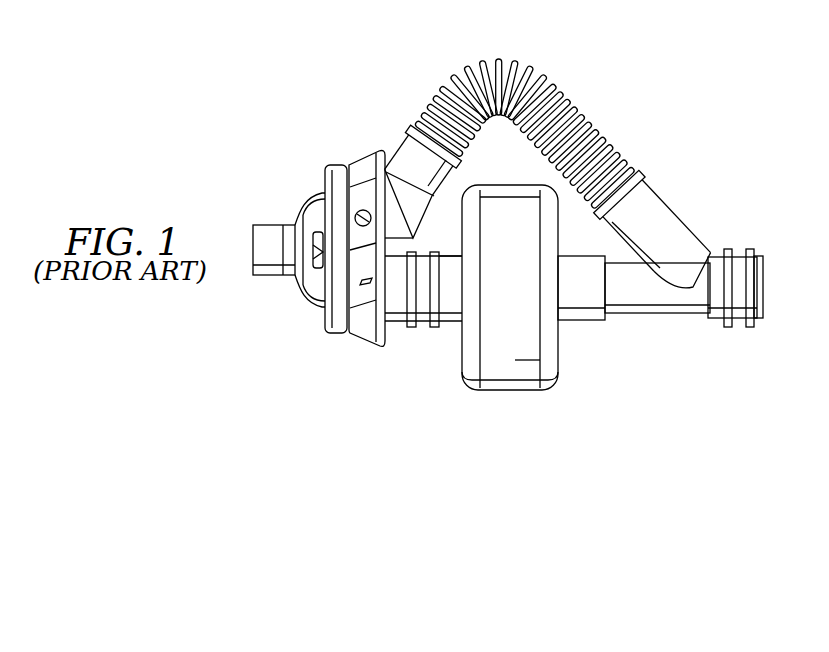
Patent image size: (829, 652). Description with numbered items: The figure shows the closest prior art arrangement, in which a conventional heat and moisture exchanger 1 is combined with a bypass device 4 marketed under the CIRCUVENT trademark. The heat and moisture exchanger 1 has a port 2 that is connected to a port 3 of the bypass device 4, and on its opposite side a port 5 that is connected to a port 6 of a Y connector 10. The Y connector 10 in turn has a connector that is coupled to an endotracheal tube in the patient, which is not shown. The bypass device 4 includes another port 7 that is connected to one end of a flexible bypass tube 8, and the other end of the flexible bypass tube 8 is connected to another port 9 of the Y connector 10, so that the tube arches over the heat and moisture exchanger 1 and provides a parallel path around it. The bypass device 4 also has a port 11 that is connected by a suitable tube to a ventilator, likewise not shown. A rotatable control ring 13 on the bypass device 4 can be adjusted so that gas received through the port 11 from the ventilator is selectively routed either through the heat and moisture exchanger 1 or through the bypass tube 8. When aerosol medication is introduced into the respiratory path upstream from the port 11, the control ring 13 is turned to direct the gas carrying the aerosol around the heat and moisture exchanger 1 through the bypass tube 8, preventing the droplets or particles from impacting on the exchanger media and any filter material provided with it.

The heat and moisture exchanger 1 is at (508, 393).
The port 2 is at (452, 283).
The port 3 is at (397, 323).
The bypass device 4 is at (283, 303).
The port 5 is at (573, 323).
The port 6 is at (622, 315).
The port 7 is at (417, 203).
The flexible bypass tube 8 is at (500, 70).
The port 9 is at (678, 241).
The Y connector 10 is at (678, 324).
The port 11 is at (265, 228).
The rotatable control ring 13 is at (362, 342).